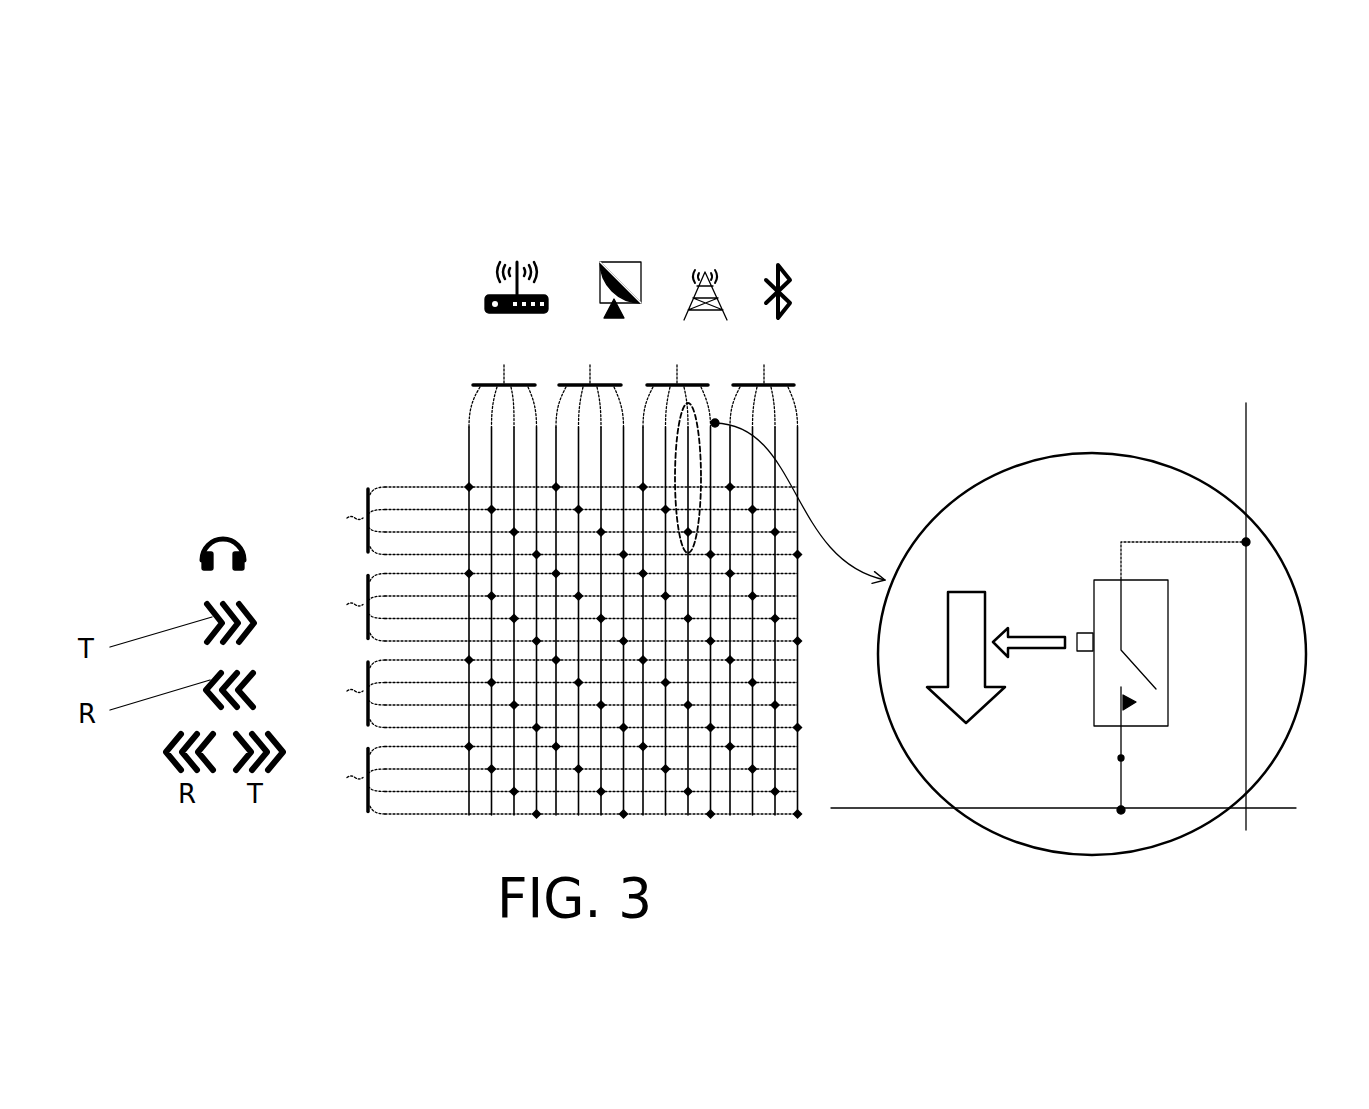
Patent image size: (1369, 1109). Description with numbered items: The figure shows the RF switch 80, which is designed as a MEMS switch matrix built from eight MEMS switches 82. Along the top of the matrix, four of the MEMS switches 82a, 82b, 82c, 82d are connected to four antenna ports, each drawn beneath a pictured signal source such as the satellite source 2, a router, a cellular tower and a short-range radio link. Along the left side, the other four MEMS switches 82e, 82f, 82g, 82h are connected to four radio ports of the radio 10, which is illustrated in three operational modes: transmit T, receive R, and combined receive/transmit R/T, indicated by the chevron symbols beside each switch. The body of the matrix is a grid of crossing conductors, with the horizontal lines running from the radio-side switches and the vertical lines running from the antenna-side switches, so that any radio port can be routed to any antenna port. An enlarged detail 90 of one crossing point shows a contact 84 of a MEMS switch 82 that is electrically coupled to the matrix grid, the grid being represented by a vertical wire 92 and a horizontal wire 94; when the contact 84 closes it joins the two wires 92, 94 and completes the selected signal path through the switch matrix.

The satellite communication source 2 is at (619, 250).
The radio 10 is at (204, 521).
The RF switch 80 is at (917, 312).
The MEMS switches 82 is at (375, 385).
The MEMS switch 82a is at (490, 383).
The MEMS switch 82b is at (578, 383).
The MEMS switch 82c is at (666, 383).
The MEMS switch 82d is at (752, 383).
The MEMS switch 82e is at (362, 529).
The MEMS switch 82f is at (362, 618).
The MEMS switch 82g is at (362, 706).
The MEMS switch 82h is at (362, 799).
The contact 84 is at (1136, 667).
The switch detail 90 is at (857, 477).
The wire 92 is at (690, 470).
The wire 94 is at (740, 532).